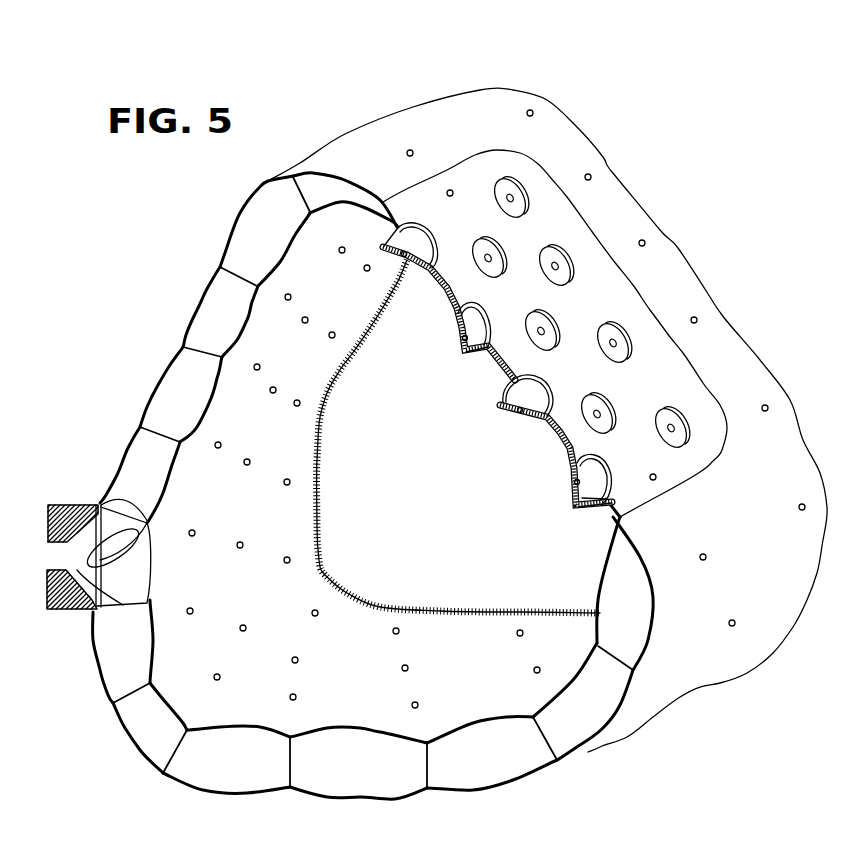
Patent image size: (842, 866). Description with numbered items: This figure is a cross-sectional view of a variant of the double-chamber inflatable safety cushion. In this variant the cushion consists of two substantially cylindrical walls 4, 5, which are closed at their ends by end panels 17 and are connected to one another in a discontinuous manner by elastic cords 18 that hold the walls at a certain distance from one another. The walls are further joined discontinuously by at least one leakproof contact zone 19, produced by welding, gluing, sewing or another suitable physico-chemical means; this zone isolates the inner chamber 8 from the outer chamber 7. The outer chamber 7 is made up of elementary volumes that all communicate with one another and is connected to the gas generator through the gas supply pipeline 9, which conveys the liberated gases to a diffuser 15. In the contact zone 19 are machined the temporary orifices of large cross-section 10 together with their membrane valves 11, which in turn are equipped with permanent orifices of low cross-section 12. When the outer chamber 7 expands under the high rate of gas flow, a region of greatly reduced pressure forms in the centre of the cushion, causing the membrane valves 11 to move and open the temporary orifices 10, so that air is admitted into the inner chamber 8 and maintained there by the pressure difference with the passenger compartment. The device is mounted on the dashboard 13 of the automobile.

The cylindrical wall 4 is at (247, 202).
The cylindrical wall 5 is at (283, 265).
The outer chamber 7 is at (258, 232).
The inner chamber 8 is at (263, 343).
The gas supply pipeline 9 is at (54, 557).
The temporary orifices of large cross-section 10 is at (570, 267).
The membrane valves 11 is at (605, 338).
The permanent orifices of low cross-section 12 is at (450, 190).
The dashboard 13 is at (79, 612).
The diffuser 15 is at (113, 602).
The end panels 17 is at (467, 553).
The elastic cords 18 is at (305, 183).
The leakproof contact zone 19 is at (540, 188).